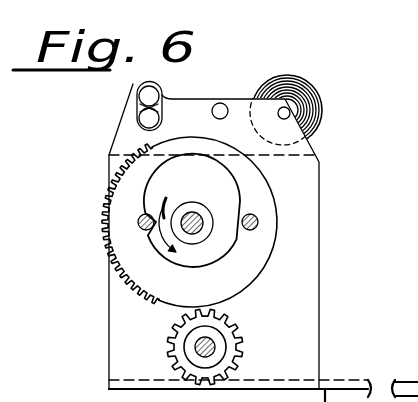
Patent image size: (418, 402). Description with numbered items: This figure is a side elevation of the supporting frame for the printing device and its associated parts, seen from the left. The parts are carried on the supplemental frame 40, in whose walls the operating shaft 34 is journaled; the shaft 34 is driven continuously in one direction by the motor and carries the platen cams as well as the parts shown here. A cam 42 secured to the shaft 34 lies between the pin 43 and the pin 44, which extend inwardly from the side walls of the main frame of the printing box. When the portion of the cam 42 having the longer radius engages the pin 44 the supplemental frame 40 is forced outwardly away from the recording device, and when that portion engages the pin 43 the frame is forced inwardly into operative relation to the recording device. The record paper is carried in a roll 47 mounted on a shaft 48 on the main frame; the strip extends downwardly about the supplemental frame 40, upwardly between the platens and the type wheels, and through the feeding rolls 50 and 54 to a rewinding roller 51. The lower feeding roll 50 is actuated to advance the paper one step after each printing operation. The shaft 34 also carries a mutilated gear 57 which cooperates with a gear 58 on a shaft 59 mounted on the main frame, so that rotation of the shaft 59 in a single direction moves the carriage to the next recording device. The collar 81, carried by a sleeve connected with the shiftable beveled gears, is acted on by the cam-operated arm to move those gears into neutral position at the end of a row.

The operating shaft 34 is at (200, 230).
The supplemental frame 40 is at (331, 266).
The cam 42 is at (192, 210).
The pin 43 is at (258, 222).
The pin 44 is at (138, 221).
The roll 47 is at (302, 96).
The shaft 48 is at (290, 113).
The lower feeding roll 50 is at (142, 118).
The rewinding roller 51 is at (220, 103).
The feeding roll 54 is at (140, 96).
The mutilated gear 57 is at (137, 289).
The gear 58 is at (236, 322).
The shaft 59 is at (214, 348).
The collar 81 is at (110, 393).